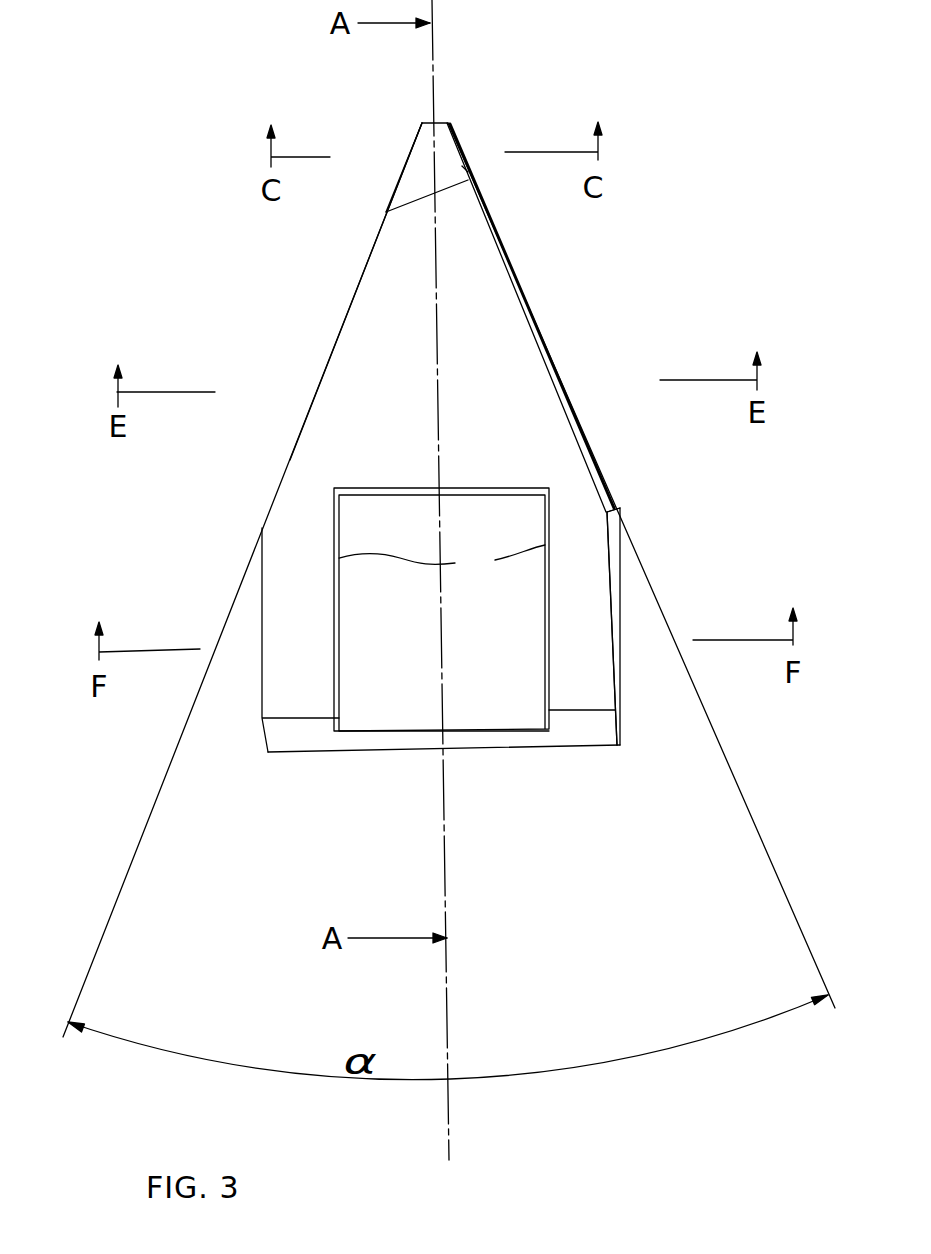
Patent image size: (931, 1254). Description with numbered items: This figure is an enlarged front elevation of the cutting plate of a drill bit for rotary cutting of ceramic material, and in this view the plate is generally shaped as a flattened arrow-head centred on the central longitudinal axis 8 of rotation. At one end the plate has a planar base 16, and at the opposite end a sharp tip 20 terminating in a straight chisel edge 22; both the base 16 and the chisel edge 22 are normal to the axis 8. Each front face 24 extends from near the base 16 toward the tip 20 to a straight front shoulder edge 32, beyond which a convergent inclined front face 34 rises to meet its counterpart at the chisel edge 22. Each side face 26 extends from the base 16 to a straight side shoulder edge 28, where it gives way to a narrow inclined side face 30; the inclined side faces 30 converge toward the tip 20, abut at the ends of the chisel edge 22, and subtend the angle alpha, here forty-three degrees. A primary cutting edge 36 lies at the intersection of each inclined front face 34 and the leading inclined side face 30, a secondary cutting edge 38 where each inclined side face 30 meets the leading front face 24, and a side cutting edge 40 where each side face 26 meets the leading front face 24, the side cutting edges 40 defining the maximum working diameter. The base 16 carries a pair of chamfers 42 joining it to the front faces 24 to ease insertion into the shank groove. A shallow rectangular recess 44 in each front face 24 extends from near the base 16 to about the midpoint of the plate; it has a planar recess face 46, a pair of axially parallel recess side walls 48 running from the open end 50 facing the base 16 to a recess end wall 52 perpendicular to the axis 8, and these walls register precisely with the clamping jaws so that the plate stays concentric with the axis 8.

The central longitudinal axis 8 is at (452, 1110).
The planar base 16 is at (550, 748).
The sharp tip 20 is at (460, 100).
The straight chisel edge 22 is at (428, 120).
The front face 24 is at (365, 432).
The side face 26 is at (615, 600).
The side shoulder edge 28 is at (612, 508).
The inclined side face 30 is at (545, 347).
The front shoulder edge 32 is at (418, 203).
The inclined front face 34 is at (417, 177).
The primary cutting edge 36 is at (465, 170).
The secondary cutting edge 38 is at (520, 278).
The side cutting edge 40 is at (260, 692).
The chamfer 42 is at (577, 730).
The shallow rectangular recess 44 is at (382, 770).
The planar recess face 46 is at (382, 641).
The recess side wall 48 is at (442, 563).
The open end 50 is at (485, 731).
The recess end wall 52 is at (522, 494).